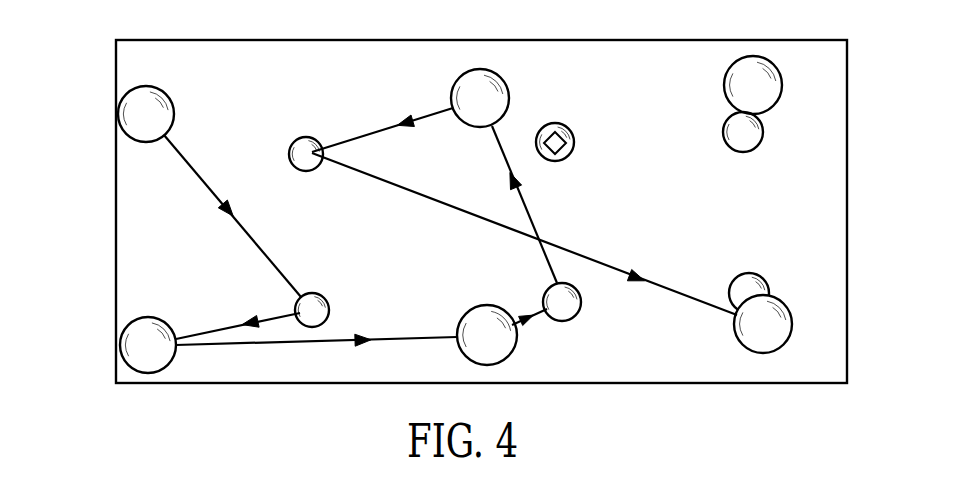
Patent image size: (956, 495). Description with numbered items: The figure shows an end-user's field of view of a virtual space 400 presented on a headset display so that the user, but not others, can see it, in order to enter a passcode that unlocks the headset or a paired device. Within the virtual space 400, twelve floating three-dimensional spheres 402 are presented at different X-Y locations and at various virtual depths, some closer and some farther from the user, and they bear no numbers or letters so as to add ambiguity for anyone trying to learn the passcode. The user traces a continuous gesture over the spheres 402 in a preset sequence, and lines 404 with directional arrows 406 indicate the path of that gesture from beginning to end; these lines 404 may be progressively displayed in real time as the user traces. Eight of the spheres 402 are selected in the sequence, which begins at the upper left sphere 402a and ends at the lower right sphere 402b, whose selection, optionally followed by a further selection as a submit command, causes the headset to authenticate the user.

The virtual space 400 is at (116, 212).
The 3D floating spheres 402 is at (120, 342).
The upper left sphere 402a is at (118, 111).
The lower right sphere 402b is at (762, 353).
The lines 404 is at (232, 223).
The directional arrows 406 is at (377, 130).